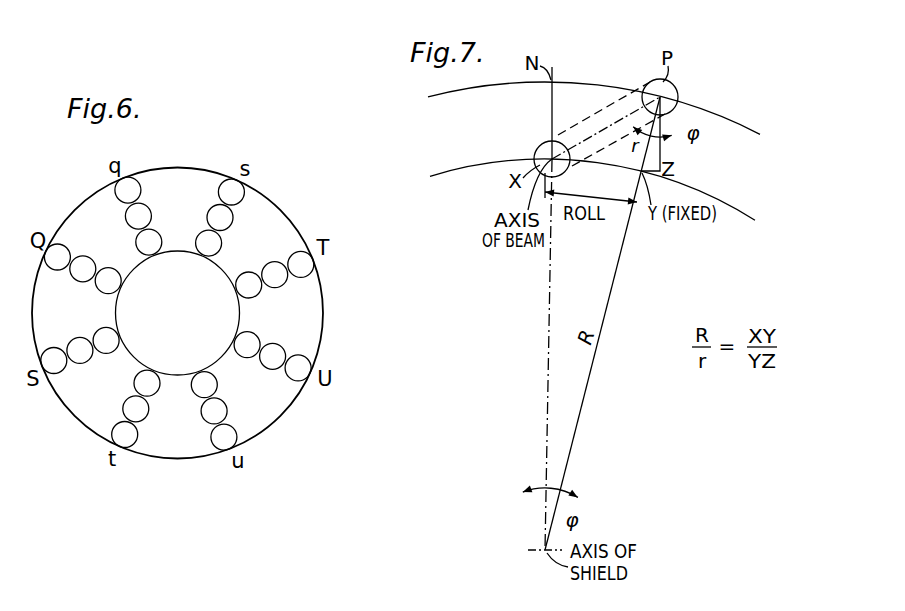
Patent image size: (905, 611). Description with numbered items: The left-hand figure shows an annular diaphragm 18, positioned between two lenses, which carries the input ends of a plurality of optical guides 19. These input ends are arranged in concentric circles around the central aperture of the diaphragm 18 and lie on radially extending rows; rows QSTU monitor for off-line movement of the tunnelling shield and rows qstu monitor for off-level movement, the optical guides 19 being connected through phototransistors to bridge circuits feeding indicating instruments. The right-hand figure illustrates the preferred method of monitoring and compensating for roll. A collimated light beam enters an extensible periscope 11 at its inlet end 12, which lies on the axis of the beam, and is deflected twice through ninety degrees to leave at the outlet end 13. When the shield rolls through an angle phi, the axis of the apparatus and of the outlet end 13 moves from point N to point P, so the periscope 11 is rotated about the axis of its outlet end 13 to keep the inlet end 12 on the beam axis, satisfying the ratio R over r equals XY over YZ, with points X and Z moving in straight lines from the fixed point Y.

In FIG. 6, the annular diaphragm 18 is at (267, 220).
In FIG. 6, the optical guides 19 is at (198, 394).
In FIG. 7, the extensible periscope 11 is at (594, 113).
In FIG. 7, the inlet end 12 is at (540, 147).
In FIG. 7, the outlet end 13 is at (676, 91).